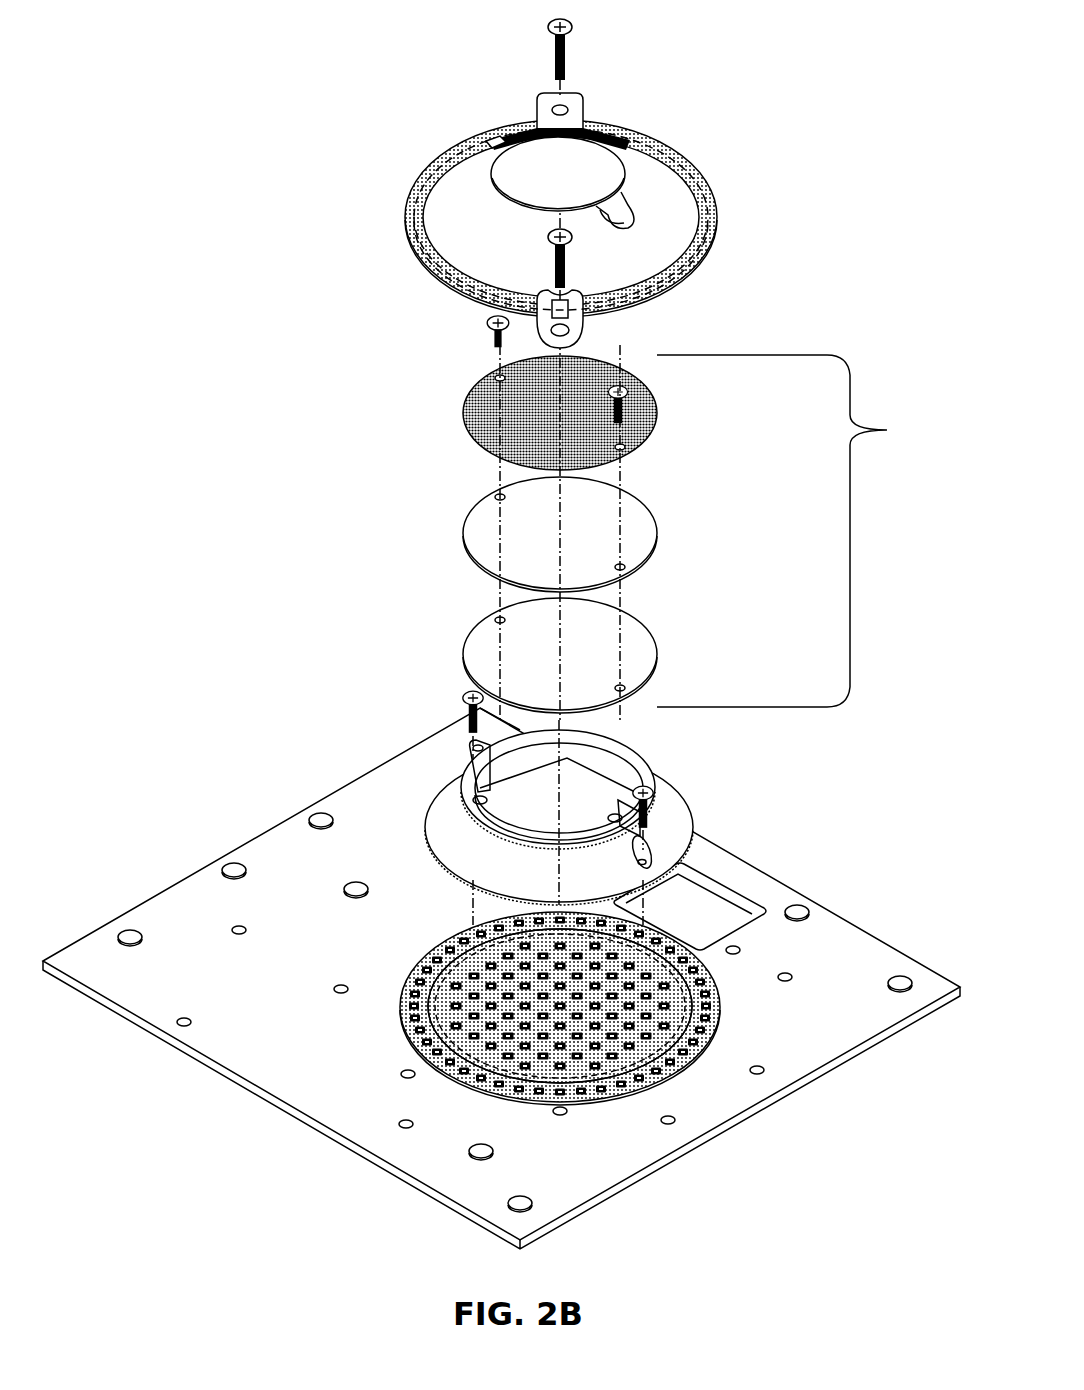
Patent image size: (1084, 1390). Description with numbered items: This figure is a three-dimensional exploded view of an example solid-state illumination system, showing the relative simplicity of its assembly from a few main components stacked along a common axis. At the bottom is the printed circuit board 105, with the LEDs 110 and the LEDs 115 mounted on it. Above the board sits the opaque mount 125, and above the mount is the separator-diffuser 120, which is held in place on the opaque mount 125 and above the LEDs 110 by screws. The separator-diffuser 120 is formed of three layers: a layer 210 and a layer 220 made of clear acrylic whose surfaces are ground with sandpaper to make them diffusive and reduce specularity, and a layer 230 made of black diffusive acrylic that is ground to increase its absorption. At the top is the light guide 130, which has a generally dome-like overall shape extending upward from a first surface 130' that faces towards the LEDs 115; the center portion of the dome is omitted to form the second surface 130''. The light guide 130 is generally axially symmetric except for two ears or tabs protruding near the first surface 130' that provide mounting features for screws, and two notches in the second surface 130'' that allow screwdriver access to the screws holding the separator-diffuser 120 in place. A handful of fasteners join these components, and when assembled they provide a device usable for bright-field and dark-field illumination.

The printed circuit board 105 is at (793, 1033).
The LEDs 110 is at (593, 1067).
The LEDs 115 is at (675, 1070).
The separator-diffuser 120 is at (797, 531).
The opaque mount 125 is at (667, 805).
The light guide 130 is at (606, 183).
The first surface 130' is at (601, 270).
The second surface 130'' is at (632, 161).
The layer 210 is at (606, 652).
The layer 220 is at (606, 532).
The layer 230 is at (590, 427).